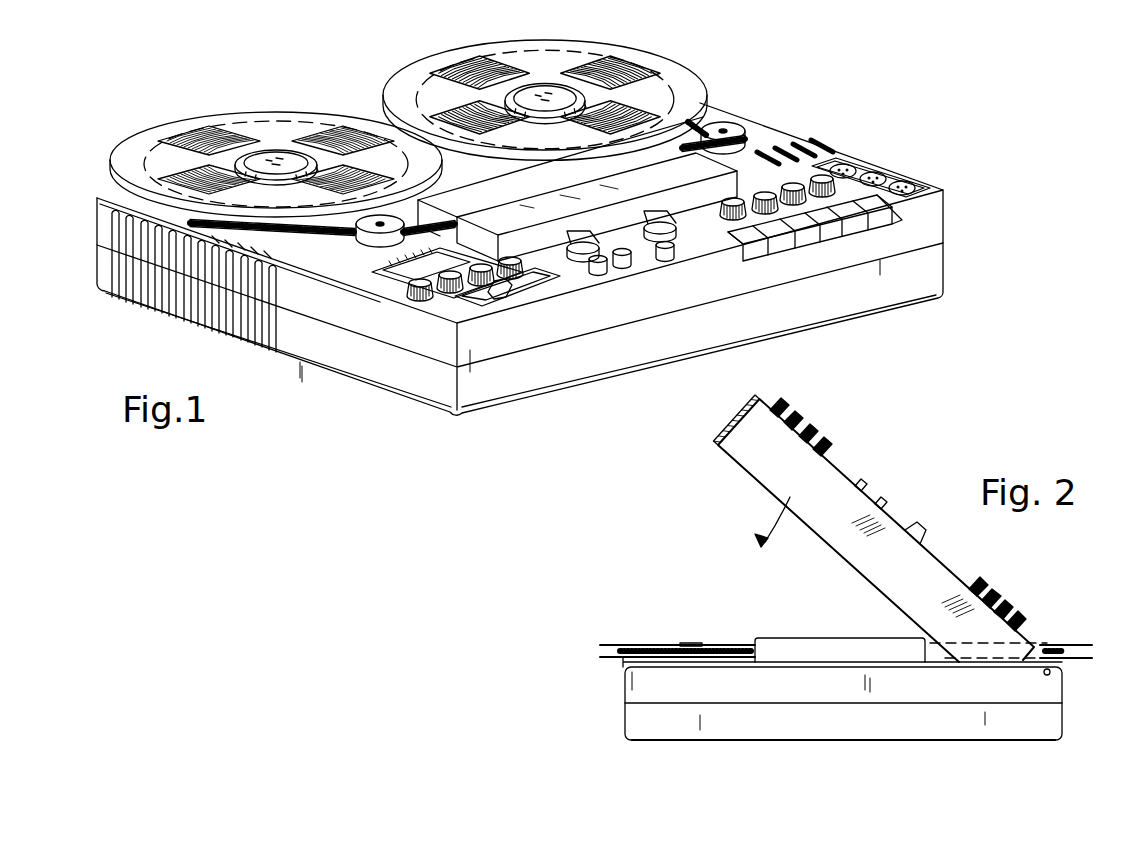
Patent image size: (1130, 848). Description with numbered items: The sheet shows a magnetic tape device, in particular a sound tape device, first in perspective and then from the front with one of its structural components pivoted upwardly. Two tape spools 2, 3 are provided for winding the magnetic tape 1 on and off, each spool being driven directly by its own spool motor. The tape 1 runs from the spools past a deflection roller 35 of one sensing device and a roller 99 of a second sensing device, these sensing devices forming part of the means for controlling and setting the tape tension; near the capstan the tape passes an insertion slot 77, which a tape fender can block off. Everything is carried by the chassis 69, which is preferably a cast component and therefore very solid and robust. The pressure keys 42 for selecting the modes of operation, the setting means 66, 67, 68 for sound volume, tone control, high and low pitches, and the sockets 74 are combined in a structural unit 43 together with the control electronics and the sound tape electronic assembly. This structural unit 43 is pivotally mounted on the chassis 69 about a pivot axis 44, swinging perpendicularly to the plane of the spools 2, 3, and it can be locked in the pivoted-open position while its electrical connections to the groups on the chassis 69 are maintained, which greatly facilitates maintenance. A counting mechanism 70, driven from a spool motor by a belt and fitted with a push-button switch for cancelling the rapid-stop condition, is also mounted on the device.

In FIG. 1, the magnetic tape 1 is at (328, 243).
In FIG. 2, the magnetic tape 1 is at (738, 655).
In FIG. 1, the tape spool 2 is at (243, 125).
In FIG. 2, the tape spool 2 is at (603, 645).
In FIG. 1, the tape spool 3 is at (398, 86).
In FIG. 2, the tape spool 3 is at (1080, 645).
In FIG. 1, the deflection roller 35 is at (735, 125).
In FIG. 1, the pressure keys 42 is at (835, 242).
In FIG. 2, the pressure keys 42 is at (980, 630).
In FIG. 1, the structural unit 43 is at (574, 282).
In FIG. 2, the structural unit 43 is at (752, 470).
In FIG. 2, the pivot axis 44 is at (1050, 674).
In FIG. 1, the setting means 66 is at (426, 297).
In FIG. 2, the setting means 66 is at (834, 424).
In FIG. 1, the setting means 67 is at (646, 255).
In FIG. 2, the setting means 67 is at (878, 481).
In FIG. 1, the setting means 68 is at (728, 222).
In FIG. 2, the setting means 68 is at (1010, 591).
In FIG. 1, the chassis 69 is at (350, 372).
In FIG. 2, the chassis 69 is at (862, 740).
In FIG. 1, the counting mechanism 70 is at (800, 148).
In FIG. 1, the sockets 74 is at (902, 183).
In FIG. 1, the insertion slot 77 is at (576, 178).
In FIG. 1, the roller 99 is at (372, 240).